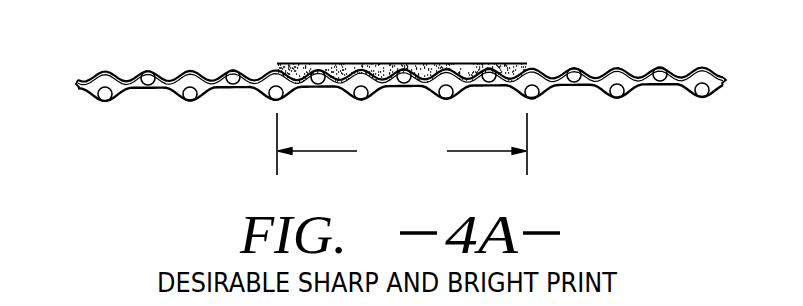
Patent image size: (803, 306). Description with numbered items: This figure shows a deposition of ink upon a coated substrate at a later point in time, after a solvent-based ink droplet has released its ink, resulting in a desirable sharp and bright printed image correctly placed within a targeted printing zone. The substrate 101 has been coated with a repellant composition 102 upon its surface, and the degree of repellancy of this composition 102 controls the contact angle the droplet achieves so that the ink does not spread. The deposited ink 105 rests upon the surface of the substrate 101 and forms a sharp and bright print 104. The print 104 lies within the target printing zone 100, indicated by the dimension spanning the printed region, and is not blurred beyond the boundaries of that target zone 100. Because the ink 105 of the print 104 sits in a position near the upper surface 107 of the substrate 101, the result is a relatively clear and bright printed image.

The target printing zone 100 is at (402, 144).
The substrate 101 is at (630, 83).
The repellant composition 102 is at (137, 70).
The print 104 is at (446, 64).
The ink 105 is at (340, 65).
The upper surface 107 is at (552, 64).